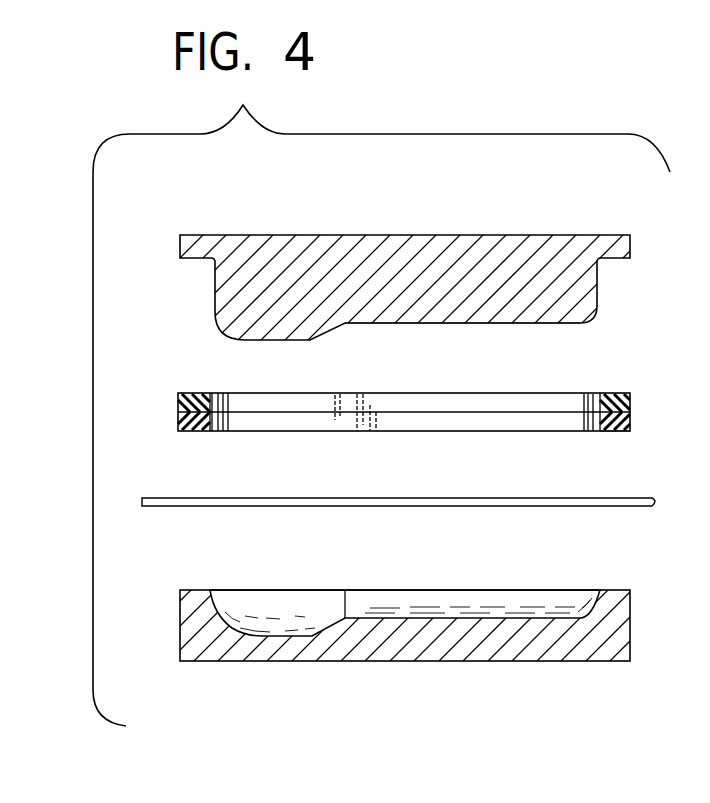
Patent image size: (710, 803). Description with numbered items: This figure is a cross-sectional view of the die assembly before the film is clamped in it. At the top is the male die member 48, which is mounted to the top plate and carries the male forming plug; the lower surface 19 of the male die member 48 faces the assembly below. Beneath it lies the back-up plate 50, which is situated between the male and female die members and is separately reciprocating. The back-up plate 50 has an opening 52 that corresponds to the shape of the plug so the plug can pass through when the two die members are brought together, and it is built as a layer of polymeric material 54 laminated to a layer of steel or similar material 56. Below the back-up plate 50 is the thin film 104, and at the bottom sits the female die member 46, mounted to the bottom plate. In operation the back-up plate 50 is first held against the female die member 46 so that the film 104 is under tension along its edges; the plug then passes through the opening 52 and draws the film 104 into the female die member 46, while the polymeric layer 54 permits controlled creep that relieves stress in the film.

The male die member 48 is at (505, 235).
The die contour surface 19 is at (400, 323).
The back-up plate 50 is at (444, 409).
The opening 52 is at (575, 396).
The polymeric layer 54 is at (630, 428).
The steel layer 56 is at (612, 393).
The upper film 104 is at (563, 500).
The female die member 46 is at (630, 630).